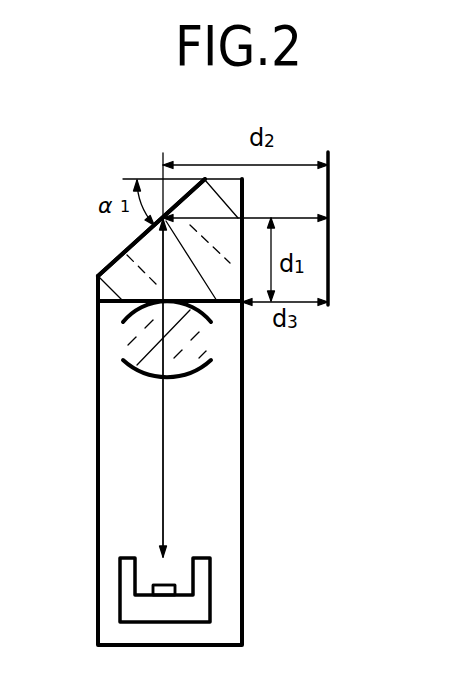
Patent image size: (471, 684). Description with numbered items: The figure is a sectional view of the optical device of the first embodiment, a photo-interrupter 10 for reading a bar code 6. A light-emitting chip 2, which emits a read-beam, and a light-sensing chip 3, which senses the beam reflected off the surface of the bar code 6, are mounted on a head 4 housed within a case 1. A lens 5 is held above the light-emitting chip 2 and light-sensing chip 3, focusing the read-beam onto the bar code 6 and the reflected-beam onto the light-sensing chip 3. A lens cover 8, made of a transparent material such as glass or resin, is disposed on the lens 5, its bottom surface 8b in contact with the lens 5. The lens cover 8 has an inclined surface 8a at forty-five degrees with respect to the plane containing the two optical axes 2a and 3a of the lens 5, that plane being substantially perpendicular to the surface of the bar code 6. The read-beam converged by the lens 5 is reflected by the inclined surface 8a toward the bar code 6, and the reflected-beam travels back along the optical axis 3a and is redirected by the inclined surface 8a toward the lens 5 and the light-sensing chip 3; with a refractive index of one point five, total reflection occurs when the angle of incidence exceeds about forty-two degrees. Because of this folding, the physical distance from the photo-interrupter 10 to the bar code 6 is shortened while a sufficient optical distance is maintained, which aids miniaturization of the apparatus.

The case 1 is at (97, 400).
The light-emitting chip 2 is at (170, 585).
The light-sensing chip 3 is at (228, 521).
The optical axis 2a is at (163, 497).
The optical axis 3a is at (86, 388).
The head 4 is at (120, 585).
The lens 5 is at (202, 345).
The bar code 6 is at (330, 172).
The lens cover 8 is at (96, 289).
The inclined surface 8a is at (116, 258).
The bottom surface 8b is at (97, 308).
The photo-interrupter 10 is at (146, 127).